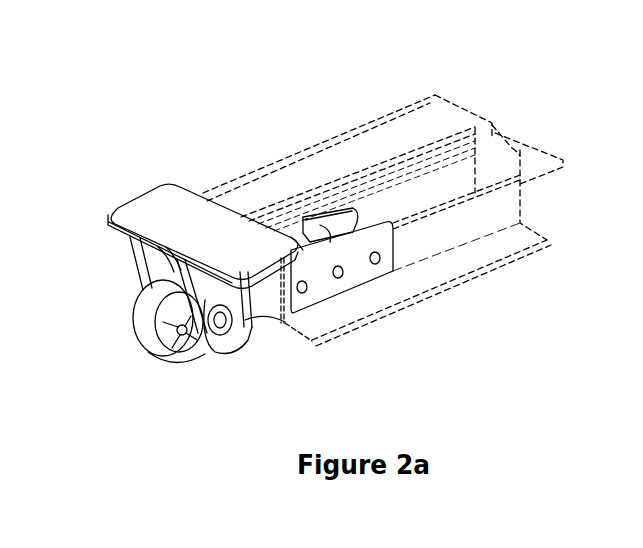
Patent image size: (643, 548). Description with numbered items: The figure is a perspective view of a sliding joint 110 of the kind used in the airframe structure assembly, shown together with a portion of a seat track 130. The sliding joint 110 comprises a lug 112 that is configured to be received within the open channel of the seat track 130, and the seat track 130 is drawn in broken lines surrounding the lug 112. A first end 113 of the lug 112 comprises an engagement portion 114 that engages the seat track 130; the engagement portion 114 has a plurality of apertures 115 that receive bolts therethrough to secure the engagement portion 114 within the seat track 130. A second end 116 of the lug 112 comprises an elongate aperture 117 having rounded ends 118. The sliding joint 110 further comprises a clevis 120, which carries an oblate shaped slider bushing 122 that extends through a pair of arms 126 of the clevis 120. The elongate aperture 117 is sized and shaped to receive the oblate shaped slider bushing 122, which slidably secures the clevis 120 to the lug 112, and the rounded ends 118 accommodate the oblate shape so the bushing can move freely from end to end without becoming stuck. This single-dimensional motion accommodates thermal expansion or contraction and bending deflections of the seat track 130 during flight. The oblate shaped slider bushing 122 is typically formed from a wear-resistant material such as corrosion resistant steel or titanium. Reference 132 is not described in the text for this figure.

The sliding joint 110 is at (154, 143).
The lug 112 is at (196, 376).
The first end 113 is at (383, 270).
The engagement portion 114 is at (350, 277).
The apertures 115 is at (307, 292).
The second end 116 is at (146, 321).
The elongate aperture 117 is at (177, 340).
The rounded ends 118 is at (173, 336).
The clevis 120 is at (146, 272).
The oblate shaped slider bushing 122 is at (214, 346).
The pair of arms 126 is at (140, 263).
The seat track 130 is at (362, 104).
The swivel axis 132 is at (285, 325).